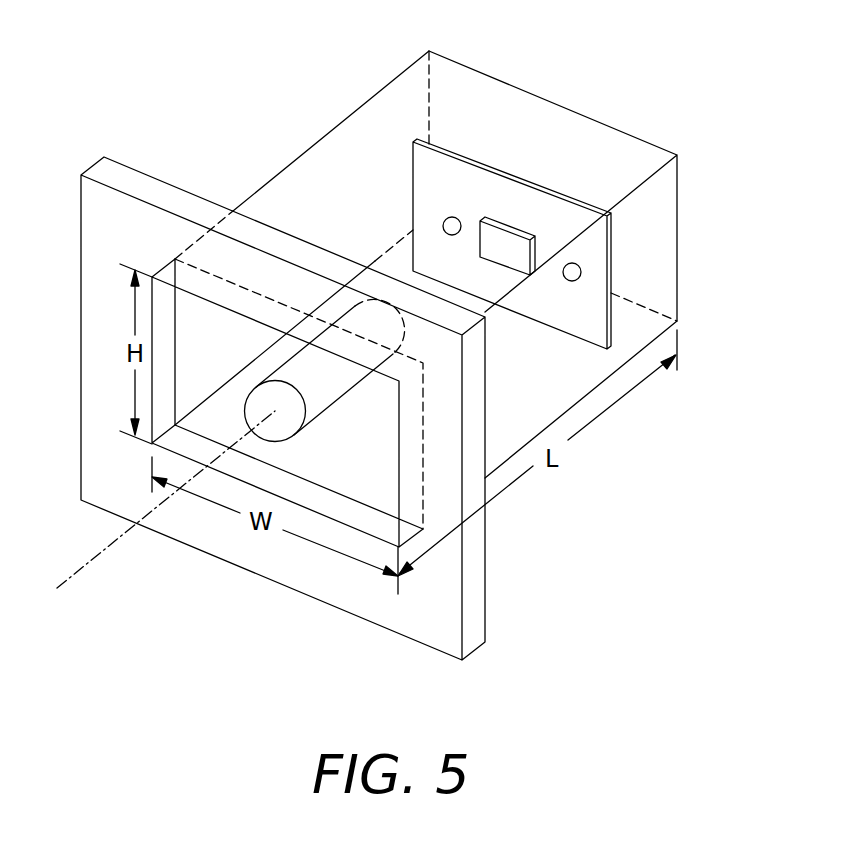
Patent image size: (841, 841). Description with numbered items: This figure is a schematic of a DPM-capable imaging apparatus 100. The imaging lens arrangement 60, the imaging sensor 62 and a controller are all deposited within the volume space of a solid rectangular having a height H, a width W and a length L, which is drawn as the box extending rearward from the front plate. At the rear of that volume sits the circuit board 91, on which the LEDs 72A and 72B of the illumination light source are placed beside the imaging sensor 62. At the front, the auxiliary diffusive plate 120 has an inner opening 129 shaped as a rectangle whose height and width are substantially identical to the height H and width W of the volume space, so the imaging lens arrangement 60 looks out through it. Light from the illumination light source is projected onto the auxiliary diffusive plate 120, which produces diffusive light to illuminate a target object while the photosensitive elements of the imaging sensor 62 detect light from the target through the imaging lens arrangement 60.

The waveguide assembly 100 is at (178, 63).
The auxiliary diffusive plate 120 is at (485, 603).
The inner opening 129 is at (353, 478).
The imaging lens arrangement 60 is at (373, 315).
The circuit board 91 is at (582, 207).
The LED 72A is at (450, 217).
The LED 72B is at (581, 267).
The imaging sensor 62 is at (508, 226).